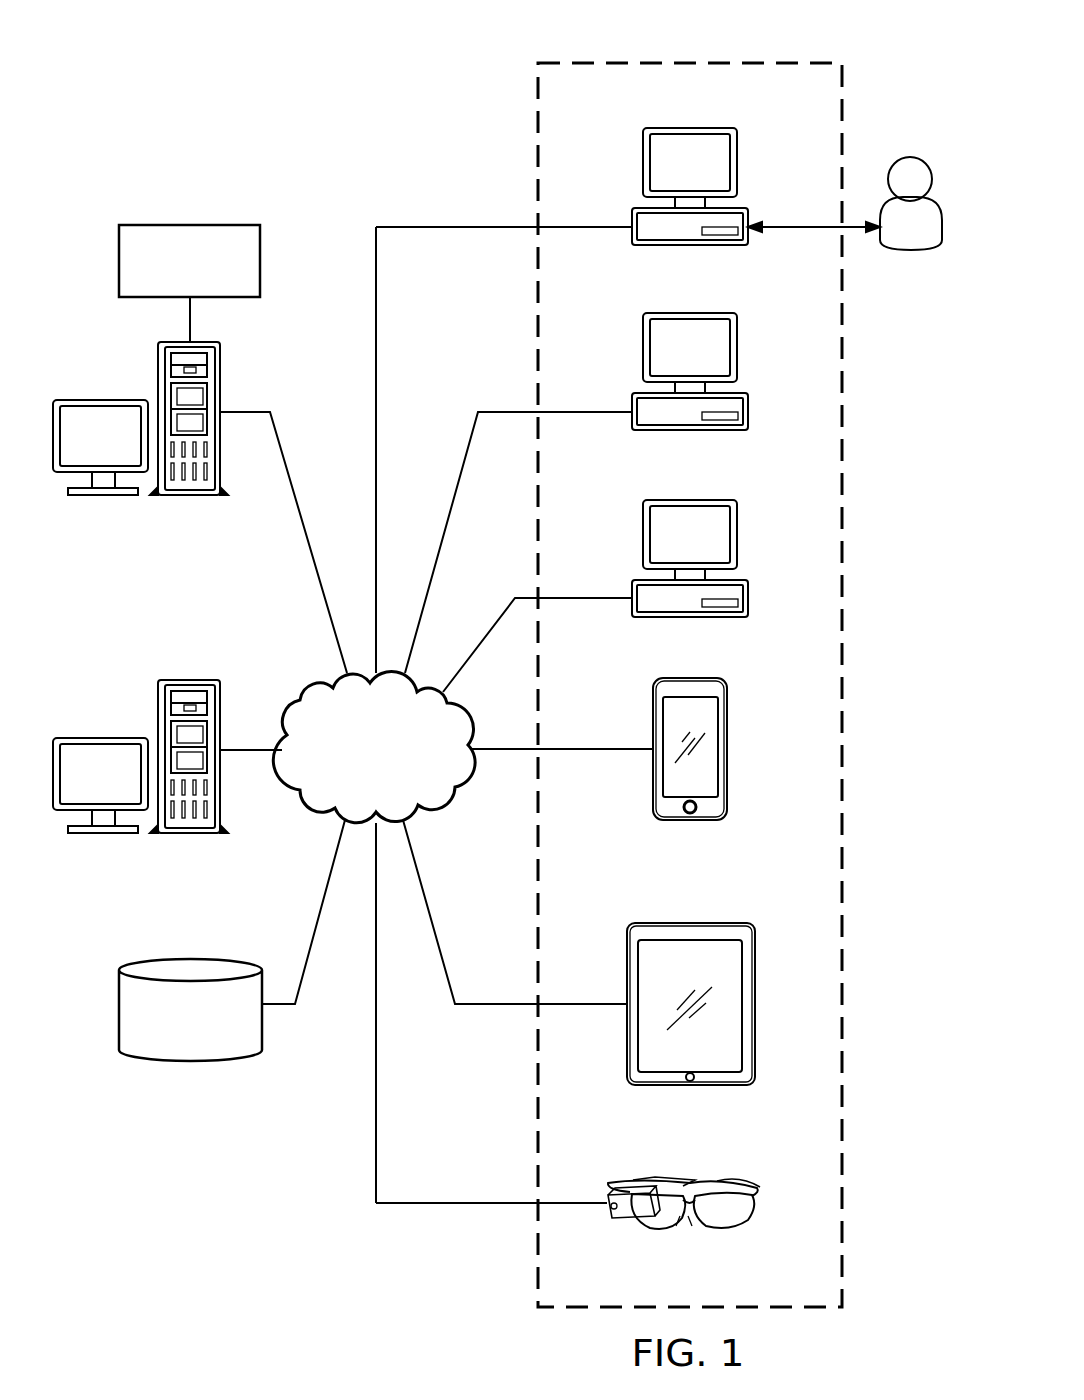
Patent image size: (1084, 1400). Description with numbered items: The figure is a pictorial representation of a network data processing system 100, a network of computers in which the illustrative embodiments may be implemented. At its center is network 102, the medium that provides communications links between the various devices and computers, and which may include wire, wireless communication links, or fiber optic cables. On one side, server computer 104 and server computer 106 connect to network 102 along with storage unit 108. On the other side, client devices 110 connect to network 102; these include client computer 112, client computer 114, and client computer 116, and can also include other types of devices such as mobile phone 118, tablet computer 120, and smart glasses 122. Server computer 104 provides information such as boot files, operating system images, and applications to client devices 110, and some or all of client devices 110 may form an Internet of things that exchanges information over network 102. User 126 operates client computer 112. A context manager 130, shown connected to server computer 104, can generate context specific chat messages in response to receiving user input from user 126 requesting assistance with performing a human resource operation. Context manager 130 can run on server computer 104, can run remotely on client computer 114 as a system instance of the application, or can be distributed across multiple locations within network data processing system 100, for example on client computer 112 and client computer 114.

The network data processing system 100 is at (265, 64).
The network 102 is at (352, 784).
The server computer 104 is at (102, 400).
The server computer 106 is at (102, 738).
The storage unit 108 is at (186, 1060).
The client devices 110 is at (754, 55).
The client computer 112 is at (738, 162).
The client computer 114 is at (738, 350).
The client computer 116 is at (738, 537).
The mobile phone 118 is at (727, 767).
The tablet computer 120 is at (755, 1018).
The smart glasses 122 is at (758, 1210).
The user 126 is at (912, 157).
The context manager 130 is at (178, 224).